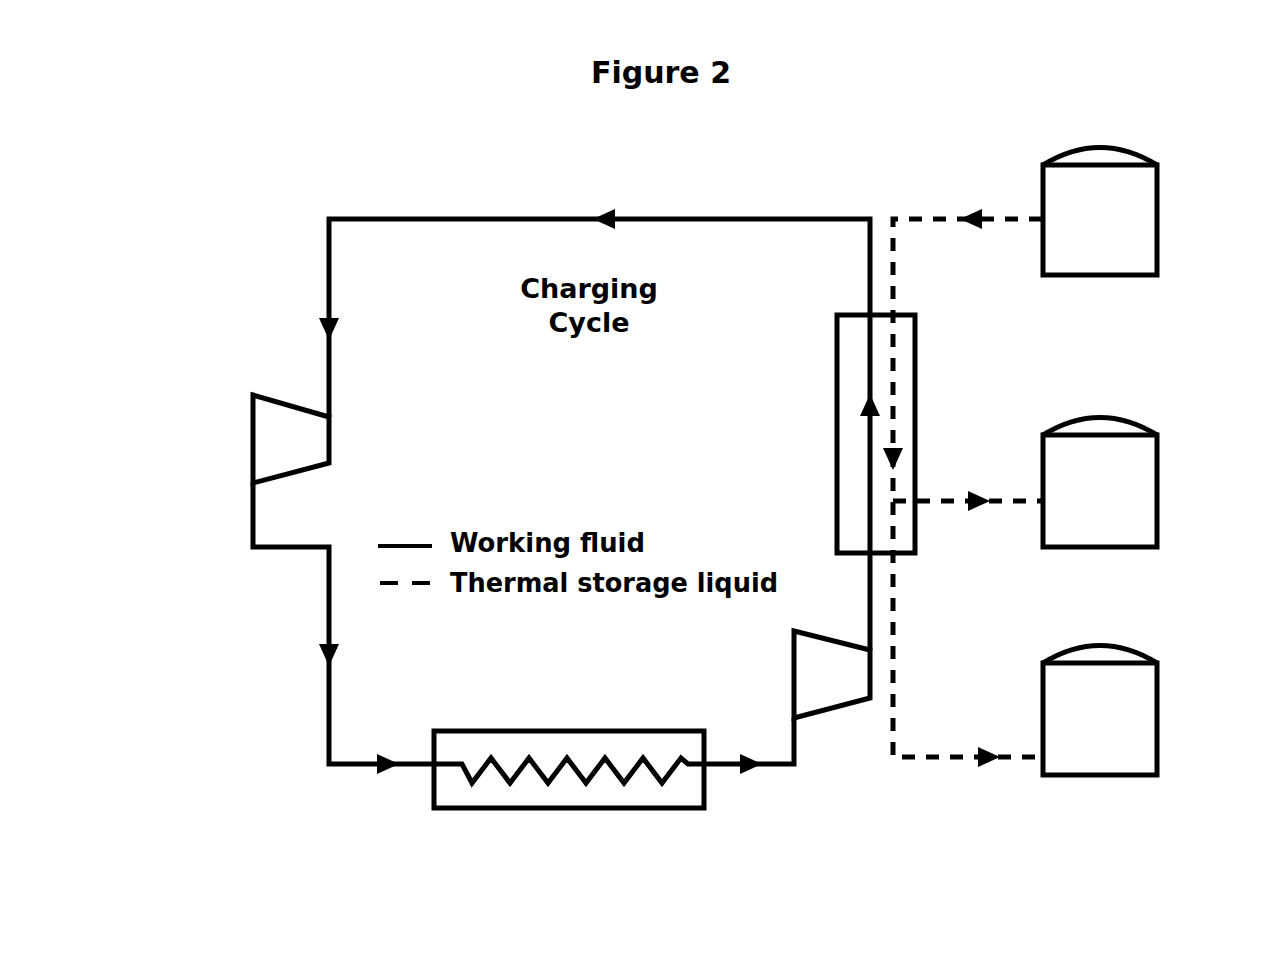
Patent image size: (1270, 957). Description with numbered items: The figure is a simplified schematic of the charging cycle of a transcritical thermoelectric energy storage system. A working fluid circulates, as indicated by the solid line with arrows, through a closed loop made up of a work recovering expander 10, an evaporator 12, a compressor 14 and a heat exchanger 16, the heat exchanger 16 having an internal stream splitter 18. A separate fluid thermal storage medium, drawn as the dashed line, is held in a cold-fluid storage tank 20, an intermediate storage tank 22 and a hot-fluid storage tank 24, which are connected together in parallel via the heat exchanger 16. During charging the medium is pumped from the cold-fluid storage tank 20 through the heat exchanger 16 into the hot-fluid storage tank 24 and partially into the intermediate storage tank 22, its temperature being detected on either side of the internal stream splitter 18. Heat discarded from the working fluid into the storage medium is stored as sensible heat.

The work recovering expander 10 is at (253, 435).
The evaporator 12 is at (536, 808).
The compressor 14 is at (794, 670).
The heat exchanger 16 is at (837, 412).
The internal stream splitter 18 is at (898, 494).
The cold-fluid storage tank 20 is at (1157, 216).
The intermediate storage tank 22 is at (1157, 487).
The hot-fluid storage tank 24 is at (1157, 710).